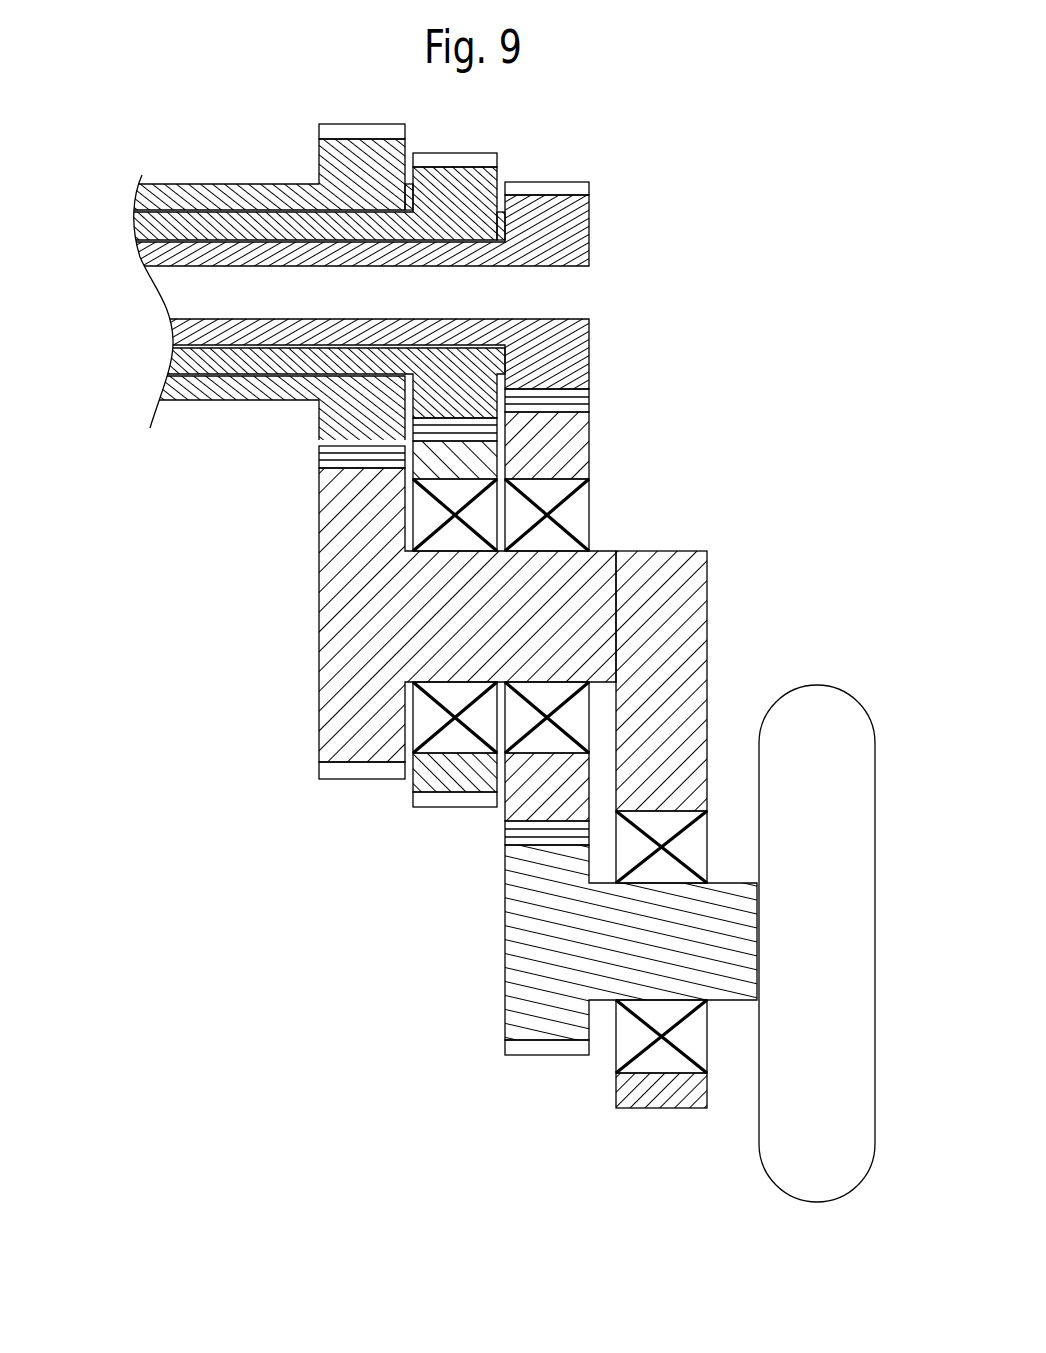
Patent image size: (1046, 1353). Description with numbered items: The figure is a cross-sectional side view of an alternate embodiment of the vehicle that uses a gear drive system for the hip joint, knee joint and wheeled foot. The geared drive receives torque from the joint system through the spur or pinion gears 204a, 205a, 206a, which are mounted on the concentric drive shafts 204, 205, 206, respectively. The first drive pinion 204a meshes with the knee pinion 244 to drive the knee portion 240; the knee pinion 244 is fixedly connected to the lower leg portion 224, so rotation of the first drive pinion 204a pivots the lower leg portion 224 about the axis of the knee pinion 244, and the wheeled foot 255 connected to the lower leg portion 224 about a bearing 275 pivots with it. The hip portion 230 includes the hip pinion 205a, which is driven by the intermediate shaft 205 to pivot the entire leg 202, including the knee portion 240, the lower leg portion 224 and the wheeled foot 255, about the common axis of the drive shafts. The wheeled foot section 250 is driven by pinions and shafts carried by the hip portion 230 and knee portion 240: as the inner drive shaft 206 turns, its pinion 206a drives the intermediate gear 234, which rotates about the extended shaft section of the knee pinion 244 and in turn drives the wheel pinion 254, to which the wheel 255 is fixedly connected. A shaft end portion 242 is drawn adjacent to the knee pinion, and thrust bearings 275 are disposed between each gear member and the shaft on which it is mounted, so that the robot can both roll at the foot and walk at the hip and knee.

The leg 202 is at (327, 280).
The drive shaft 204 is at (143, 199).
The intermediate shaft 205 is at (143, 226).
The inner drive shaft 206 is at (143, 254).
The first drive pinion 204a is at (372, 131).
The hip pinion 205a is at (466, 159).
The inner drive shaft pinion 206a is at (557, 188).
The hip portion 230 is at (502, 466).
The intermediate gear 234 is at (578, 447).
The knee portion 240 is at (389, 644).
The knee pinion 244 is at (328, 607).
The shaft end portion 242 is at (425, 782).
The lower leg portion 224 is at (696, 631).
The wheeled foot section 250 is at (619, 930).
The wheel pinion 254 is at (515, 945).
The wheeled foot 255 is at (840, 700).
The thrust bearing 275 is at (577, 514).